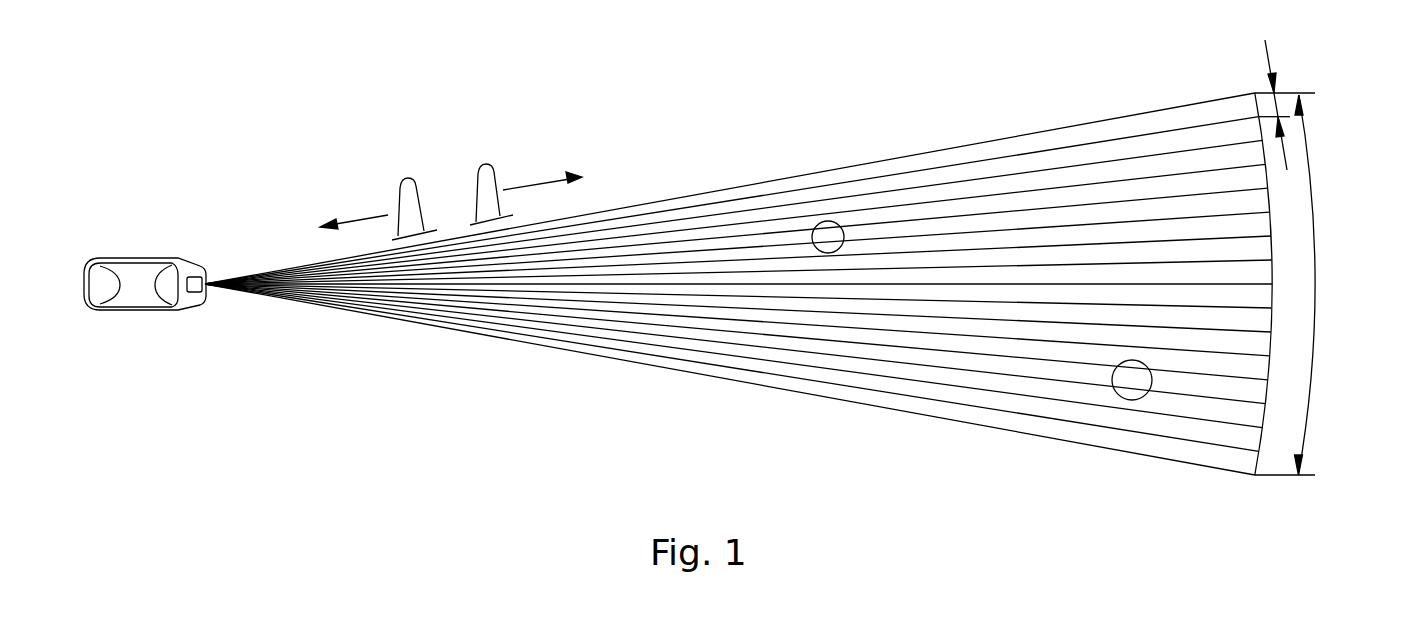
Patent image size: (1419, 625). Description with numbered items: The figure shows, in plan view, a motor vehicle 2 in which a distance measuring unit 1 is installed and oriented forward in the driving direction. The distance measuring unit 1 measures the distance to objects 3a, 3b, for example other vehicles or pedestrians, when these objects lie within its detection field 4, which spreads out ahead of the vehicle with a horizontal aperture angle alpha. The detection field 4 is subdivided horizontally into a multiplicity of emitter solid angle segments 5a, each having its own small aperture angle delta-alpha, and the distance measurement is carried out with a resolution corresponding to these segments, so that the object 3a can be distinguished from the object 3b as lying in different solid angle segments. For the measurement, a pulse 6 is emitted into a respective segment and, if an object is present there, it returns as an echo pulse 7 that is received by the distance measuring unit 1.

The distance measuring unit 1 is at (200, 267).
The motor vehicle 2 is at (93, 254).
The object 3a is at (826, 236).
The object 3b is at (1133, 380).
The detection field 4 is at (738, 249).
The emitter solid angle segments 5a is at (1088, 177).
The pulse 6 is at (484, 178).
The echo pulse 7 is at (407, 192).